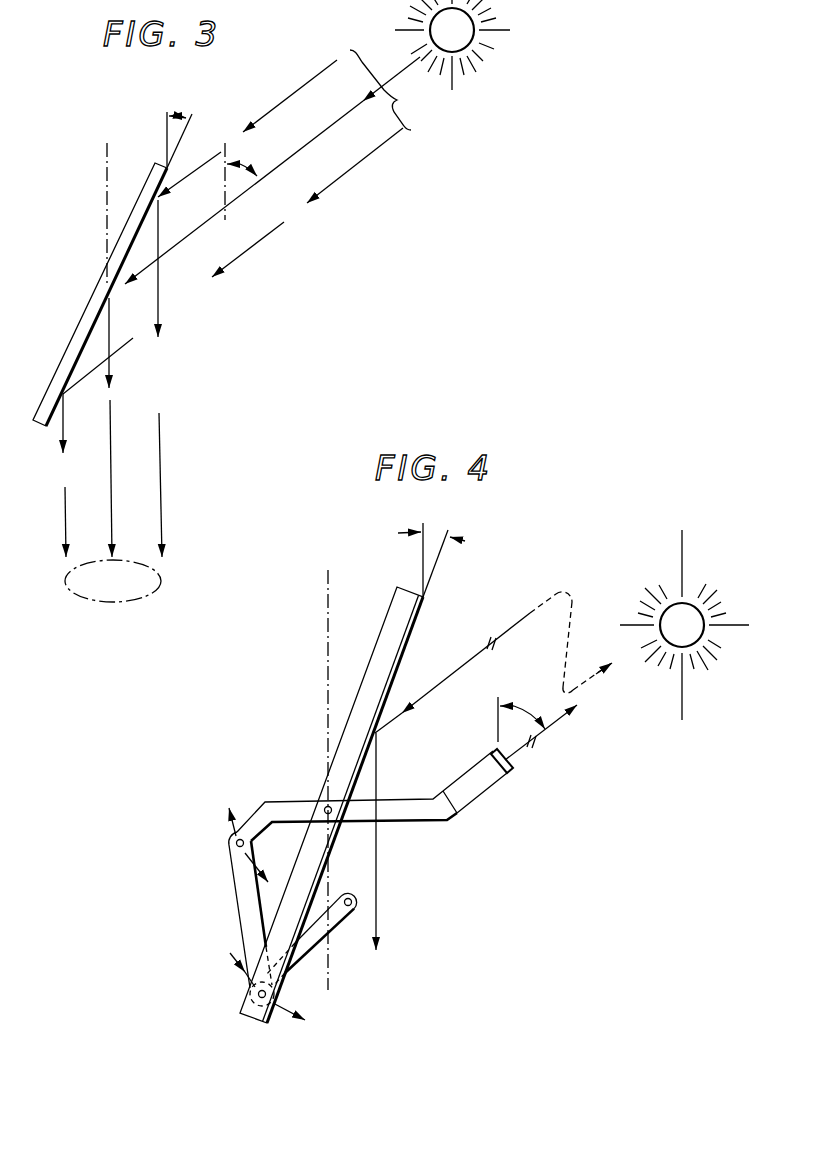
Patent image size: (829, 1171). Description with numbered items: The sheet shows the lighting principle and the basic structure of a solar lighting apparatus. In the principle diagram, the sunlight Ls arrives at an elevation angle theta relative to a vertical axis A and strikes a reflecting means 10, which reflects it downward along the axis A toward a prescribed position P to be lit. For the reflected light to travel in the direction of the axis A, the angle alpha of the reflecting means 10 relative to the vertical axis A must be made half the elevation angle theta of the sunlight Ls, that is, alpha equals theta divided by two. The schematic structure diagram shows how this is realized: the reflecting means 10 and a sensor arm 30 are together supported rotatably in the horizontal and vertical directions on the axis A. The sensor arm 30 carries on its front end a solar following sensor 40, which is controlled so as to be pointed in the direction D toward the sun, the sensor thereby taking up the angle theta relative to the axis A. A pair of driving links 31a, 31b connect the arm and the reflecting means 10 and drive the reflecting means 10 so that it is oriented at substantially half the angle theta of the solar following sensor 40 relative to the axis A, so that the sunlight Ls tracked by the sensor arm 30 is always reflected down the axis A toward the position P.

In FIG. 3, the reflecting means 10 is at (80, 325).
In FIG. 4, the reflecting means 10 is at (388, 626).
In FIG. 4, the sensor arm 30 is at (432, 818).
In FIG. 4, the driving link 31a is at (245, 905).
In FIG. 4, the driving link 31b is at (302, 957).
In FIG. 4, the solar following sensor 40 is at (480, 790).
In FIG. 3, the vertical axis A is at (107, 197).
In FIG. 4, the vertical axis A is at (327, 656).
In FIG. 3, the prescribed position to be lit P is at (161, 577).
In FIG. 3, the sunlight Ls is at (388, 90).
In FIG. 4, the sunlight Ls is at (472, 657).
In FIG. 4, the direction toward the sun D is at (556, 726).
In FIG. 3, the angle of the reflecting means alpha is at (212, 125).
In FIG. 4, the angle of the reflecting means alpha is at (431, 550).
In FIG. 3, the elevation angle of the sunlight theta is at (241, 181).
In FIG. 4, the elevation angle of the sunlight theta is at (521, 716).